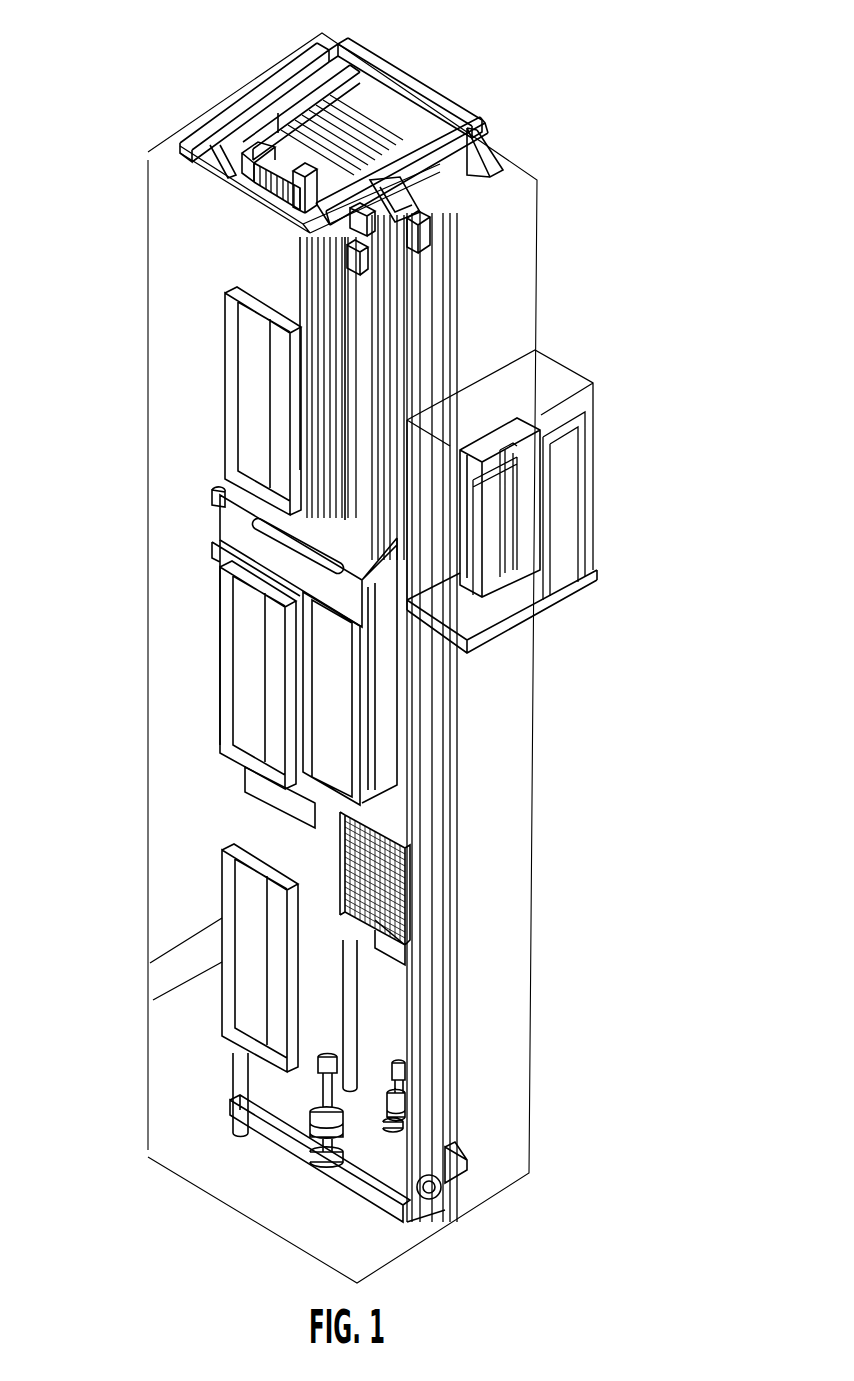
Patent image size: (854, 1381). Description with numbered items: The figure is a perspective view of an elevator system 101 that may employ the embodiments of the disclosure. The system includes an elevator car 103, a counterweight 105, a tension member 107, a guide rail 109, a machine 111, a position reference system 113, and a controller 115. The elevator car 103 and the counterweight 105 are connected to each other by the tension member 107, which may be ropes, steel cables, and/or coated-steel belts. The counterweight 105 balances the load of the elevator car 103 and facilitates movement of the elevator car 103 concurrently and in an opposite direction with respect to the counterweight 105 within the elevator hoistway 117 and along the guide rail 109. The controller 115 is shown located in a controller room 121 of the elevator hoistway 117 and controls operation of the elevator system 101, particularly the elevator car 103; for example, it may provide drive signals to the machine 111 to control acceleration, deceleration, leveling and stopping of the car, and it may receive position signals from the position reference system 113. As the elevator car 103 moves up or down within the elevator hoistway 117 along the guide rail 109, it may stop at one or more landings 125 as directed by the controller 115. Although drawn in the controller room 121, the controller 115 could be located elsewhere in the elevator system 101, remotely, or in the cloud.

The elevator system 101 is at (392, 641).
The elevator car 103 is at (407, 657).
The counterweight 105 is at (470, 888).
The tension member 107 is at (460, 387).
The guide rail 109 is at (505, 717).
The machine 111 is at (225, 134).
The position reference system 113 is at (513, 191).
The controller 115 is at (569, 507).
The elevator hoistway 117 is at (174, 655).
The controller room 121 is at (551, 482).
The landings 125 is at (177, 679).